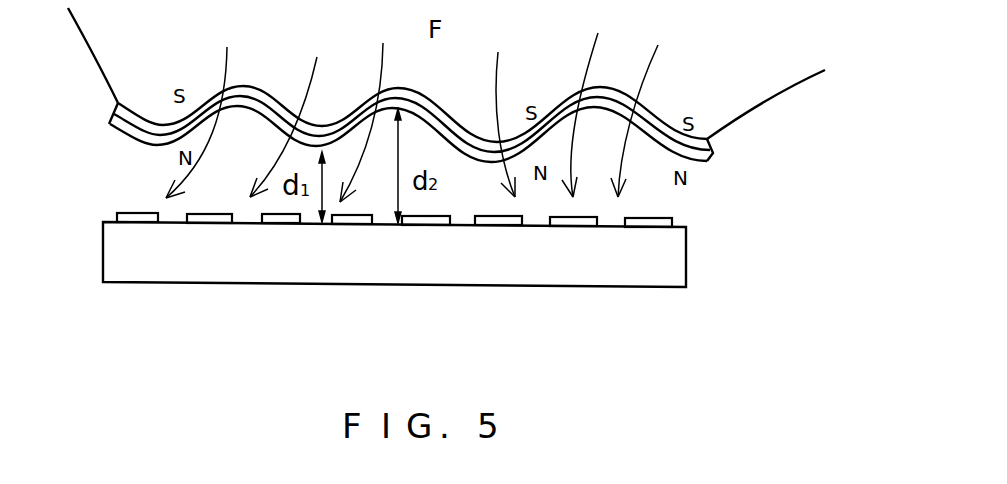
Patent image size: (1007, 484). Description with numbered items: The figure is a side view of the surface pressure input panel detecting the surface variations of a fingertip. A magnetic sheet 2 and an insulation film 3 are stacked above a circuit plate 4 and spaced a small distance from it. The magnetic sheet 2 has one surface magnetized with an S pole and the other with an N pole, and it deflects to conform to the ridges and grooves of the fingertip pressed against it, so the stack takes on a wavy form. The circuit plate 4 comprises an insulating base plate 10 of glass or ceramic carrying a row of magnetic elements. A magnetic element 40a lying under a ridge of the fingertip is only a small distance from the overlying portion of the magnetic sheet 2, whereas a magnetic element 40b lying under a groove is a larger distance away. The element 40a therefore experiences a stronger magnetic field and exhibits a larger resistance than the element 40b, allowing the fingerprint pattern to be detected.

The magnetic sheet 2 is at (119, 105).
The insulation film 3 is at (128, 123).
The circuit plate 4 is at (473, 273).
The insulating base plate 10 is at (686, 268).
The magnetic element 40a is at (350, 223).
The magnetic element 40b is at (430, 224).